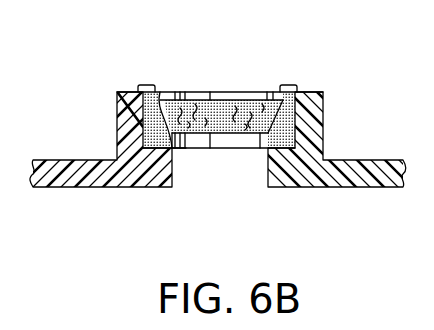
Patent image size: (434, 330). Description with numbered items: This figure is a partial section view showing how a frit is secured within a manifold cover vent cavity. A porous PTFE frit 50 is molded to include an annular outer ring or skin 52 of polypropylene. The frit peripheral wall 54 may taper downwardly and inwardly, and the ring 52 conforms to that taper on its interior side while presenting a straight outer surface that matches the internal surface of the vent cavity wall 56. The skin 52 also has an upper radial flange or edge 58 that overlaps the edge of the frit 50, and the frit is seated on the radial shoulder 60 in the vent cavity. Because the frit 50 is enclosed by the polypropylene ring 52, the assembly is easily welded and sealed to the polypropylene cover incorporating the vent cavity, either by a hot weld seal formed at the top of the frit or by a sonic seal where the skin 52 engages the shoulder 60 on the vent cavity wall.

The porous PTFE frit 50 is at (283, 95).
The annular outer ring or skin 52 is at (157, 134).
The frit peripheral wall 54 is at (158, 99).
The vent cavity wall 56 is at (314, 134).
The upper radial flange or edge 58 is at (220, 162).
The radial shoulder 60 is at (173, 148).